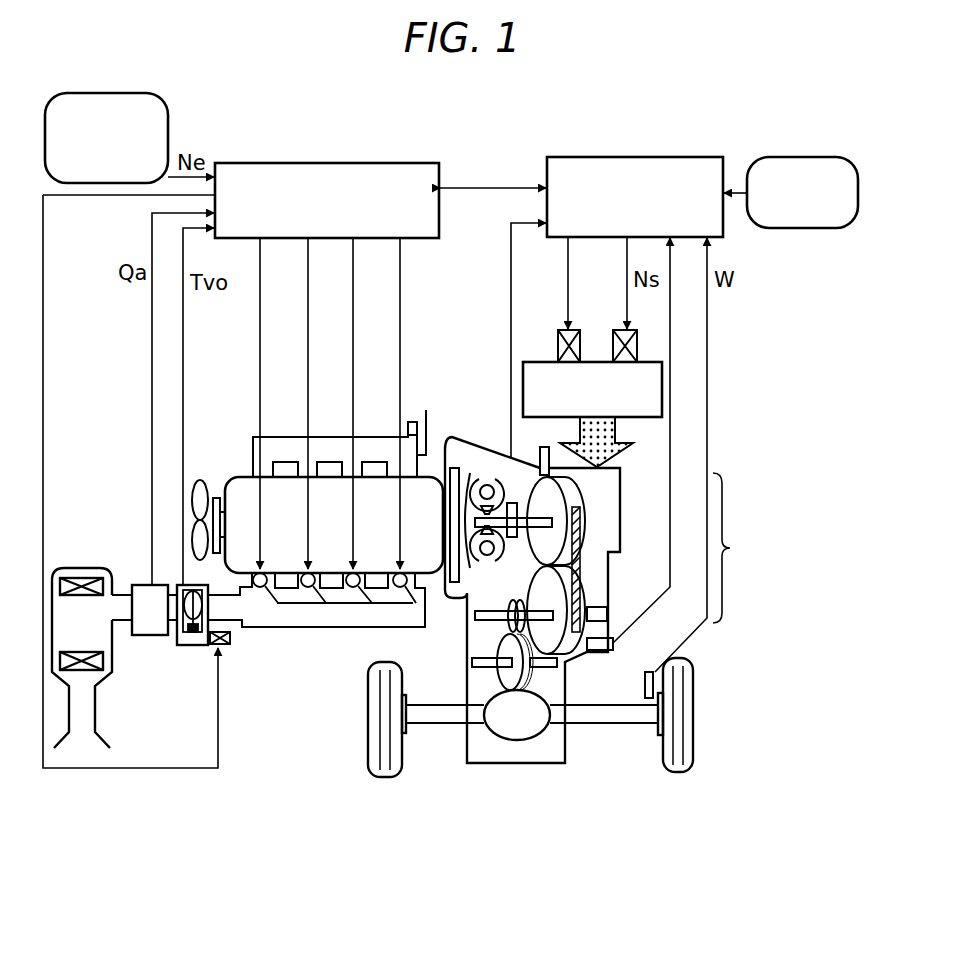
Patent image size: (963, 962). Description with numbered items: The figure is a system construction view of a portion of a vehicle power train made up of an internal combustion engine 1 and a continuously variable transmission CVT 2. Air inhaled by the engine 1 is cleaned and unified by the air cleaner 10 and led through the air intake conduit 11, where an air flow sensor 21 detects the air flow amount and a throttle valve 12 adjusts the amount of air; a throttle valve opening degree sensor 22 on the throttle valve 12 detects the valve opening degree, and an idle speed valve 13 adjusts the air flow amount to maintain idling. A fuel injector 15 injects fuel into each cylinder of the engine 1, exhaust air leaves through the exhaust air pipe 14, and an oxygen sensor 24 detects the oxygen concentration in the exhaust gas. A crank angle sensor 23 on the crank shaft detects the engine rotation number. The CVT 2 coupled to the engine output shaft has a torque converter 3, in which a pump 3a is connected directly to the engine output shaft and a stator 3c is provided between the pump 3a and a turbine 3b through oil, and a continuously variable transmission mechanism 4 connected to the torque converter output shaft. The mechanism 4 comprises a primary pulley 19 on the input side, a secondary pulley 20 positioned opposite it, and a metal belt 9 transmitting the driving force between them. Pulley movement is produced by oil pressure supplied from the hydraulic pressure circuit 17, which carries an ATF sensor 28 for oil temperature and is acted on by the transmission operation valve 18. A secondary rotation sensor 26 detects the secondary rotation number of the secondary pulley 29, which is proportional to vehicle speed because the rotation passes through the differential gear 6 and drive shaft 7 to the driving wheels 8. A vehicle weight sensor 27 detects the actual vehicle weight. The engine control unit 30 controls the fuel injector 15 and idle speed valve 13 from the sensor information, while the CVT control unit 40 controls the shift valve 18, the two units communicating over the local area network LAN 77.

The internal combustion engine 1 is at (240, 475).
The continuously variable transmission CVT 2 is at (483, 764).
The torque converter 3 is at (501, 487).
The pump 3a is at (497, 470).
The turbine 3b is at (486, 611).
The stator 3c is at (490, 563).
The continuously variable transmission mechanism 4 is at (731, 548).
The differential gear 6 is at (517, 742).
The drive shaft 7 is at (531, 740).
The driving wheels 8 is at (530, 740).
The metal belt 9 is at (598, 561).
The air cleaner 10 is at (80, 568).
The air intake conduit 11 is at (280, 620).
The throttle valve 12 is at (193, 635).
The idle speed valve 13 is at (223, 647).
The exhaust air pipe 14 is at (425, 410).
The fuel injector 15 is at (334, 615).
The hydraulic pressure circuit 17 is at (662, 394).
The transmission operation valve (shift valve) 18 is at (612, 336).
The primary pulley 19 is at (590, 503).
The secondary pulley 20 is at (590, 599).
The air flow sensor 21 is at (146, 633).
The throttle valve opening degree sensor 22 is at (193, 593).
The crank angle sensor 23 is at (134, 93).
The oxygen sensor 24 is at (414, 421).
The secondary rotation sensor 26 is at (600, 650).
The vehicle weight sensor 27 is at (650, 672).
The ATF sensor 28 is at (810, 157).
The secondary pulley 29 is at (540, 447).
The engine control unit 30 is at (400, 163).
The continuously variable transmission CVT control unit 40 is at (700, 157).
The local area network LAN 77 is at (487, 188).